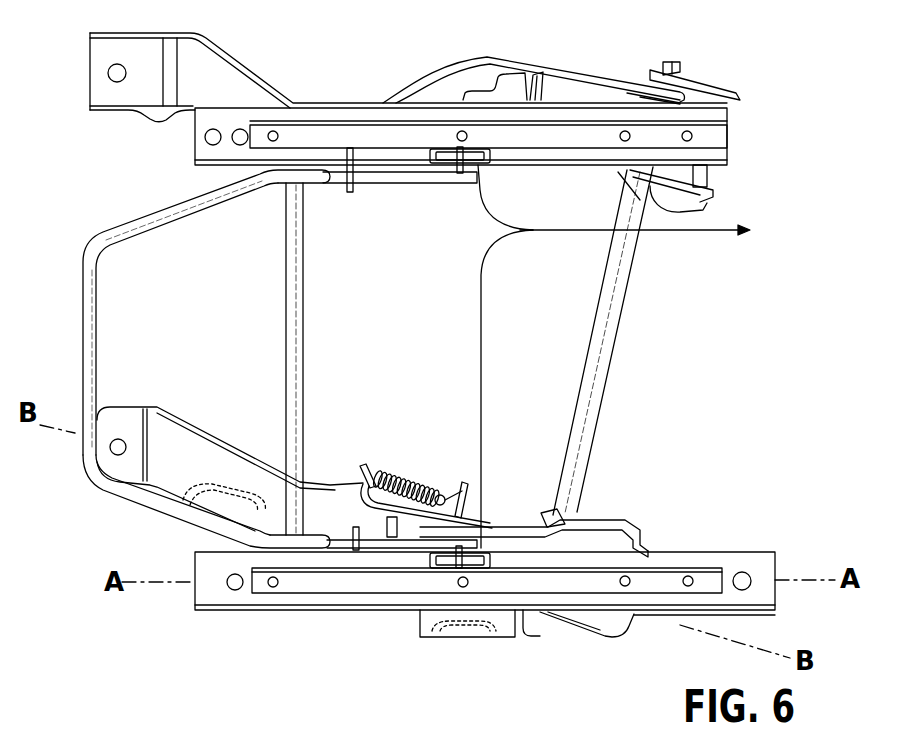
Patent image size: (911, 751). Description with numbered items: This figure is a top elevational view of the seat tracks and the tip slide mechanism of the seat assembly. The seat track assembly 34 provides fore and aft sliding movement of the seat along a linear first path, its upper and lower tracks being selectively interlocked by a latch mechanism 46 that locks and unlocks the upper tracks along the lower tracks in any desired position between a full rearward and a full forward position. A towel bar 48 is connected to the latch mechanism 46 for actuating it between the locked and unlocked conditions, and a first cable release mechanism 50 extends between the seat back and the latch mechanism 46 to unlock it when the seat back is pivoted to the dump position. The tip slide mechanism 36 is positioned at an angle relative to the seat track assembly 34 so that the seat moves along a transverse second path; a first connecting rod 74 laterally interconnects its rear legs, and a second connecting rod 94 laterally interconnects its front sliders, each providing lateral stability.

The seat track assembly 34 is at (693, 552).
The tip slide mechanism 36 is at (532, 92).
The latch mechanism 46 is at (440, 150).
The towel bar 48 is at (83, 320).
The first cable release mechanism 50 is at (678, 235).
The first connecting rod 74 is at (588, 397).
The second connecting rod 94 is at (295, 370).